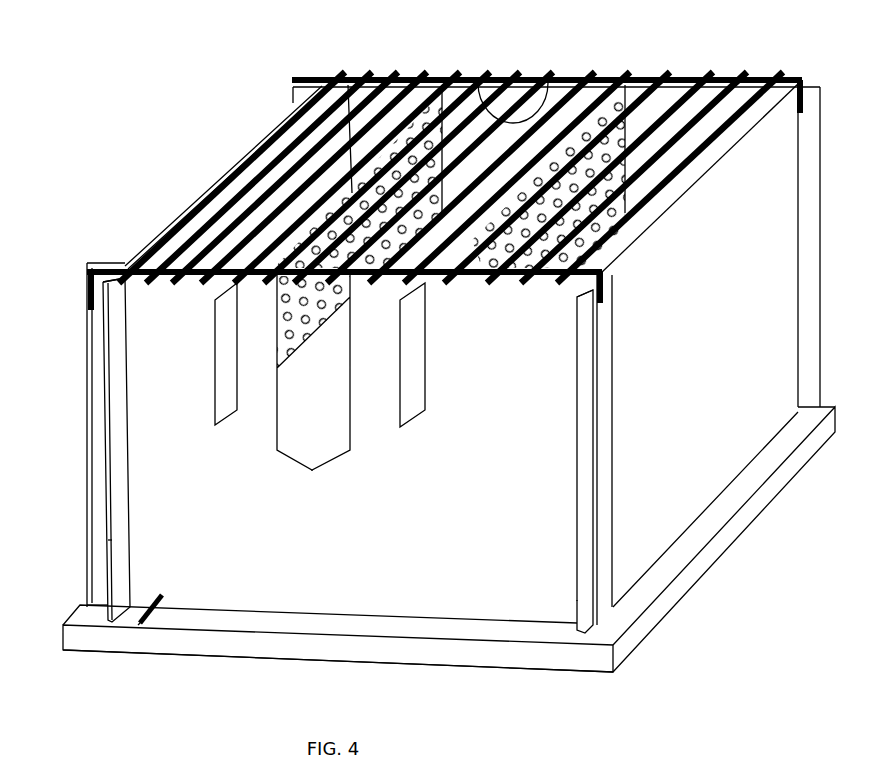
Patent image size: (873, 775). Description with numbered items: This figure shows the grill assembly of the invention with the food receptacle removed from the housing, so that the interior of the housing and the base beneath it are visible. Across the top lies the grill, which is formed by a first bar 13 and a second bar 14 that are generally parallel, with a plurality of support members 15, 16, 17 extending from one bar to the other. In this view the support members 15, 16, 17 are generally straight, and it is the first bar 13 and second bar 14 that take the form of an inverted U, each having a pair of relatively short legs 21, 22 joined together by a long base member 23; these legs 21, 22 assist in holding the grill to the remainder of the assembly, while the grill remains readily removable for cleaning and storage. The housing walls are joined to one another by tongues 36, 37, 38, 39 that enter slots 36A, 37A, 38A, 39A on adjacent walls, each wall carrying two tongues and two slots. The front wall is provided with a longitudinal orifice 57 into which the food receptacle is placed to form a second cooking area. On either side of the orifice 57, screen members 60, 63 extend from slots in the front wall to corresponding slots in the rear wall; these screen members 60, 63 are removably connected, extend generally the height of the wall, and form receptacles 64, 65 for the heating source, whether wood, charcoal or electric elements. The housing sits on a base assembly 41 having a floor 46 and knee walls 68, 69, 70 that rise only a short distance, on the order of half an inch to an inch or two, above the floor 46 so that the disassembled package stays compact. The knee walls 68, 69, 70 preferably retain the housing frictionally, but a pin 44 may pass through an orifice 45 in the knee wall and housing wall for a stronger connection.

The first bar 13 is at (109, 263).
The second bar 14 is at (279, 120).
The support member 15 is at (461, 69).
The support member 16 is at (553, 80).
The support member 17 is at (740, 79).
The leg 21 is at (86, 288).
The leg 22 is at (603, 272).
The base member 23 is at (180, 281).
The tongue 36 is at (95, 417).
The slot 36A is at (117, 300).
The tongue 37 is at (110, 366).
The slot 37A is at (122, 541).
The tongue 38 is at (576, 405).
The slot 38A is at (585, 343).
The tongue 39 is at (613, 468).
The slot 39A is at (578, 527).
The base assembly 41 is at (63, 636).
The pin 44 is at (139, 623).
The orifice 45 is at (163, 599).
The floor 46 is at (331, 396).
The orifice 57 is at (312, 472).
The screen member 60 is at (343, 69).
The screen member 63 is at (626, 83).
The receptacle 64 is at (380, 100).
The receptacle 65 is at (694, 150).
The knee wall 68 is at (112, 656).
The knee wall 69 is at (81, 605).
The knee wall 70 is at (664, 613).